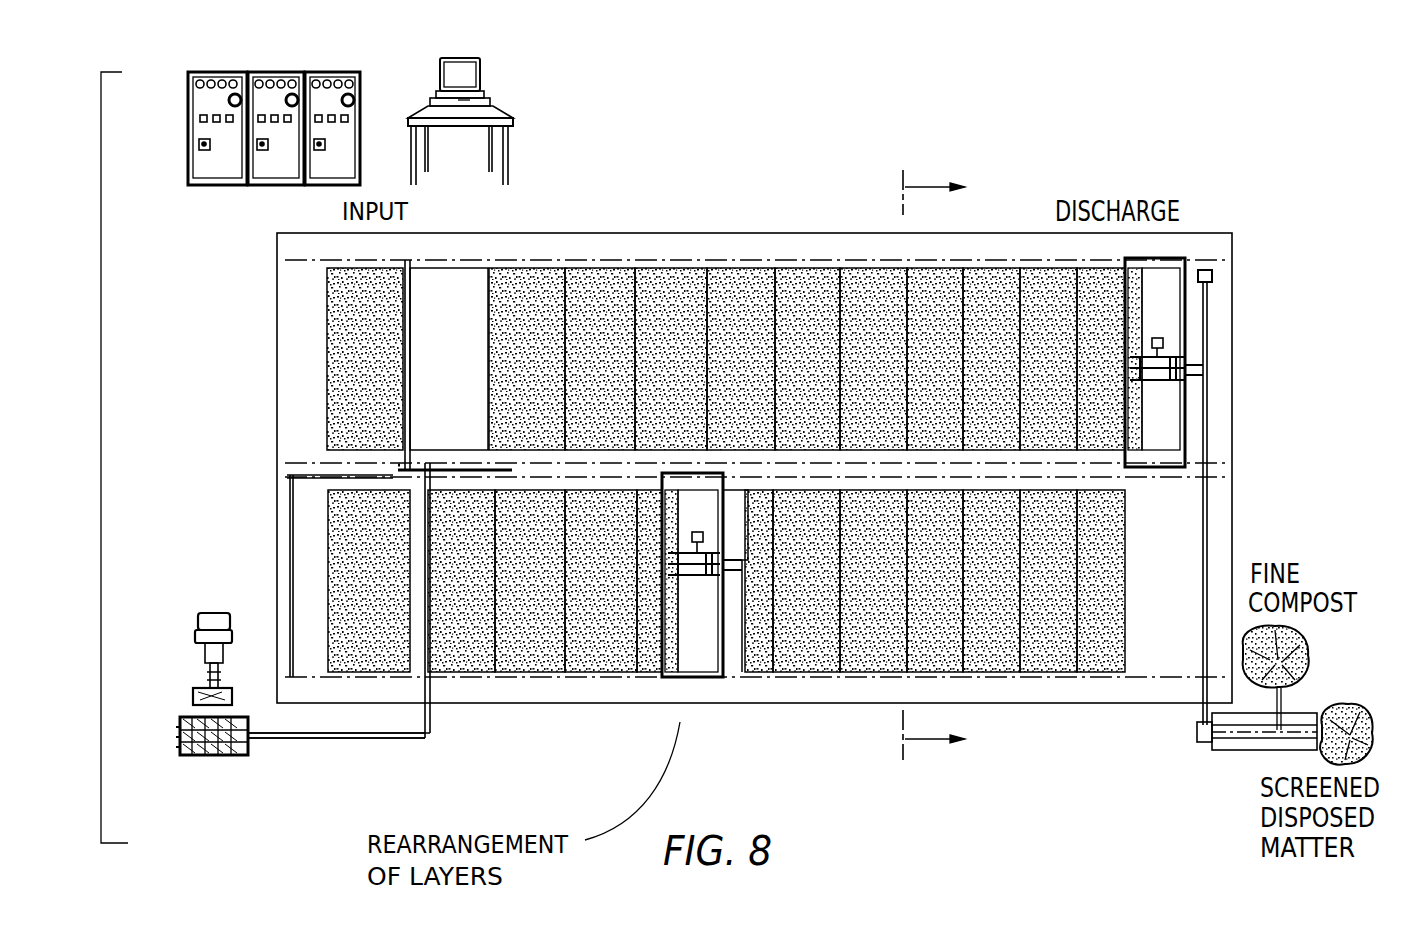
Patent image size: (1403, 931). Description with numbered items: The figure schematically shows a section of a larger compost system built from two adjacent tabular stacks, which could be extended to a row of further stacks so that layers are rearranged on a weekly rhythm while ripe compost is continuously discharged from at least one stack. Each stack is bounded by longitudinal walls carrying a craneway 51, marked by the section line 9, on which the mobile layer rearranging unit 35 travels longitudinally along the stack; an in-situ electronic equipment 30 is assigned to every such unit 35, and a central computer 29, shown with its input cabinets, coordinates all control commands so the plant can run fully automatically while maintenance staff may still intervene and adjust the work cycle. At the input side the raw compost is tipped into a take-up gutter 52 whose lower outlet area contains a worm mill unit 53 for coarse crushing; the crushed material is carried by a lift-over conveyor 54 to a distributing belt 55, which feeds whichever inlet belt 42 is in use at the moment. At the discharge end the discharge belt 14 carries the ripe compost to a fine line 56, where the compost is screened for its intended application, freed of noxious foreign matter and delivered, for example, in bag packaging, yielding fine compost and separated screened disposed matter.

The section line of FIG. 9 is at (921, 466).
The discharge belt 14 is at (1232, 490).
The central computer 29 is at (470, 70).
The in-situ electronic equipment 30 is at (1160, 338).
The mobile layer rearranging unit 35 is at (1157, 397).
The inlet belt 42 is at (288, 510).
The craneway 51 is at (652, 462).
The take-up gutter 52 is at (222, 757).
The worm mill unit 53 is at (190, 757).
The lift-over conveyor 54 is at (360, 740).
The distributing belt 55 is at (432, 718).
The fine line 56 is at (1213, 750).